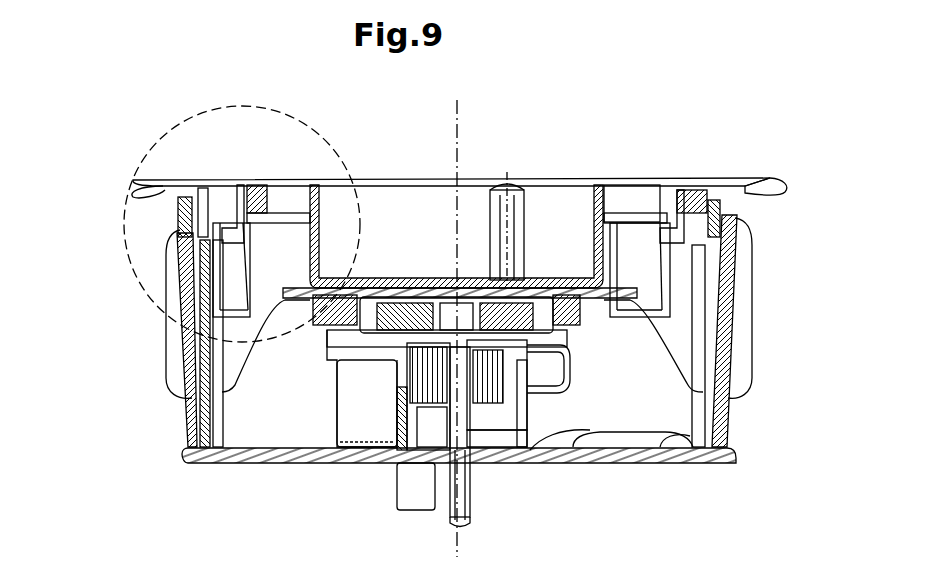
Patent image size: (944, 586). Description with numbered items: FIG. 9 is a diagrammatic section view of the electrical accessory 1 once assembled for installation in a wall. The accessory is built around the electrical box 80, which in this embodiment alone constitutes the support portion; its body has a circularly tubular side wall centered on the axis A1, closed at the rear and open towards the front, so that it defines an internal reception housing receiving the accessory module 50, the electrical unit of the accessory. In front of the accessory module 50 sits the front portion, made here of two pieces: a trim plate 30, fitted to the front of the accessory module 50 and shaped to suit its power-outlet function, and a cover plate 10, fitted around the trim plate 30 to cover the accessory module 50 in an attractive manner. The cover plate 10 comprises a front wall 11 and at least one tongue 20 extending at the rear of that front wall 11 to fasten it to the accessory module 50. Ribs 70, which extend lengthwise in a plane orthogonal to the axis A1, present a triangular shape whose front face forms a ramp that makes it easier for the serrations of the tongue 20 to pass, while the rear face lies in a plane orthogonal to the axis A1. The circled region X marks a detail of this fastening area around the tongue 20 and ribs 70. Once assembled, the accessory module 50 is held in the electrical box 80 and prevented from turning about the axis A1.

The electrical accessory 1 is at (630, 140).
The cover plate 10 is at (184, 172).
The front wall 11 is at (765, 178).
The tongue 20 is at (222, 195).
The trim plate 30 is at (327, 205).
The accessory module 50 is at (533, 425).
The rib 70 is at (255, 252).
The electrical box 80 is at (603, 465).
The axis A1 is at (457, 122).
The detail region X is at (268, 108).